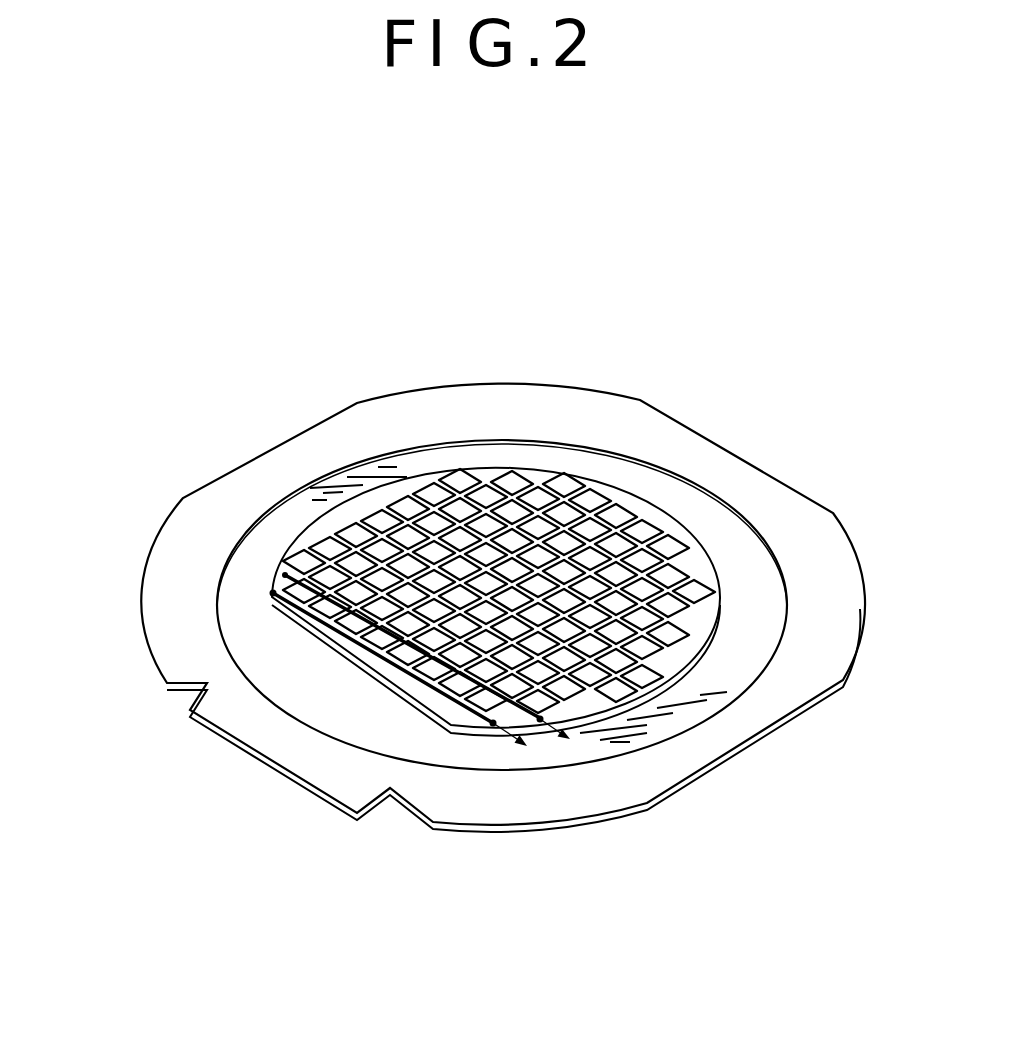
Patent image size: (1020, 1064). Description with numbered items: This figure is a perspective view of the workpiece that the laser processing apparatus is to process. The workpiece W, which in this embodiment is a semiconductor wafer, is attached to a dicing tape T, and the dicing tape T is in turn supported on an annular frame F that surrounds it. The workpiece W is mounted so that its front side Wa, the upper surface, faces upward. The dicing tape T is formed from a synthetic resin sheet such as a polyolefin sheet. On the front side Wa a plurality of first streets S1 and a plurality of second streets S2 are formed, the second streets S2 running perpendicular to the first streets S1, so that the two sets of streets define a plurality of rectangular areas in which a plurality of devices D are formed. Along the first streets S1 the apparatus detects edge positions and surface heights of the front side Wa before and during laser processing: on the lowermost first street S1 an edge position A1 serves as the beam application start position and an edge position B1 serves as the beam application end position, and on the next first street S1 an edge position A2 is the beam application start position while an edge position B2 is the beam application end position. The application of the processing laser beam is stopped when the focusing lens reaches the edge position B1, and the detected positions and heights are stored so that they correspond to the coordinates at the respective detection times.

The annular frame F is at (826, 595).
The dicing tape T is at (245, 565).
The workpiece W is at (284, 552).
The front side Wa is at (420, 488).
The device D is at (688, 592).
The first street S1 is at (418, 618).
The second street S2 is at (598, 535).
The edge position A1 is at (273, 593).
The edge position A2 is at (285, 575).
The edge position B1 is at (493, 723).
The edge position B2 is at (540, 722).